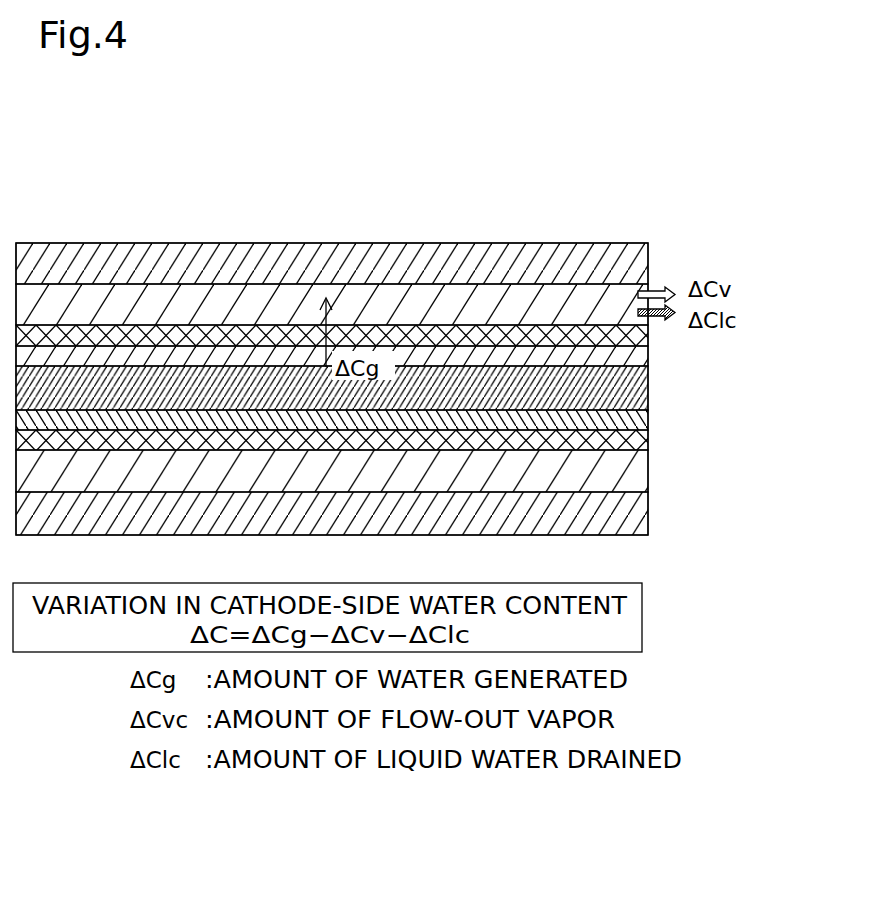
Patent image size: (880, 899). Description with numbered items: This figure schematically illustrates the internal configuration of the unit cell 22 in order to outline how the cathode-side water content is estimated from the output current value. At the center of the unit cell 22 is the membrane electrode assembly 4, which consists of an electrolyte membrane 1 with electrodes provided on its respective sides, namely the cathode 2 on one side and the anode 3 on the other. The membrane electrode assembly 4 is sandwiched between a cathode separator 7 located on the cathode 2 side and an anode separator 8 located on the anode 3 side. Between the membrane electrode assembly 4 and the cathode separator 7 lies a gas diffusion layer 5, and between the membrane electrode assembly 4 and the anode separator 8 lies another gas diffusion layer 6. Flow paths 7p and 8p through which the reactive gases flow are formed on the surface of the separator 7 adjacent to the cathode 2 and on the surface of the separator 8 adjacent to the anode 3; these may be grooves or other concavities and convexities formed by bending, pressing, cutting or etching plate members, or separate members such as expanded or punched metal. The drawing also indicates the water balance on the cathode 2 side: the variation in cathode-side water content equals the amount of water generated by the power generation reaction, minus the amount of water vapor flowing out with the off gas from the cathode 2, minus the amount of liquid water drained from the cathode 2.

The unit cell 22 is at (636, 162).
The cathode separator 7 is at (635, 216).
The flow path 7p is at (647, 285).
The gas diffusion layer 5 is at (650, 331).
The cathode 2 is at (650, 353).
The electrolyte membrane 1 is at (650, 385).
The anode 3 is at (364, 437).
The membrane electrode assembly 4 is at (379, 407).
The gas diffusion layer 6 is at (650, 443).
The flow path 8p is at (638, 473).
The anode separator 8 is at (655, 533).